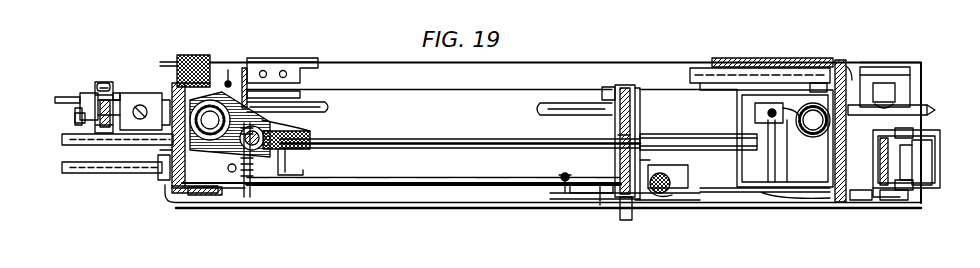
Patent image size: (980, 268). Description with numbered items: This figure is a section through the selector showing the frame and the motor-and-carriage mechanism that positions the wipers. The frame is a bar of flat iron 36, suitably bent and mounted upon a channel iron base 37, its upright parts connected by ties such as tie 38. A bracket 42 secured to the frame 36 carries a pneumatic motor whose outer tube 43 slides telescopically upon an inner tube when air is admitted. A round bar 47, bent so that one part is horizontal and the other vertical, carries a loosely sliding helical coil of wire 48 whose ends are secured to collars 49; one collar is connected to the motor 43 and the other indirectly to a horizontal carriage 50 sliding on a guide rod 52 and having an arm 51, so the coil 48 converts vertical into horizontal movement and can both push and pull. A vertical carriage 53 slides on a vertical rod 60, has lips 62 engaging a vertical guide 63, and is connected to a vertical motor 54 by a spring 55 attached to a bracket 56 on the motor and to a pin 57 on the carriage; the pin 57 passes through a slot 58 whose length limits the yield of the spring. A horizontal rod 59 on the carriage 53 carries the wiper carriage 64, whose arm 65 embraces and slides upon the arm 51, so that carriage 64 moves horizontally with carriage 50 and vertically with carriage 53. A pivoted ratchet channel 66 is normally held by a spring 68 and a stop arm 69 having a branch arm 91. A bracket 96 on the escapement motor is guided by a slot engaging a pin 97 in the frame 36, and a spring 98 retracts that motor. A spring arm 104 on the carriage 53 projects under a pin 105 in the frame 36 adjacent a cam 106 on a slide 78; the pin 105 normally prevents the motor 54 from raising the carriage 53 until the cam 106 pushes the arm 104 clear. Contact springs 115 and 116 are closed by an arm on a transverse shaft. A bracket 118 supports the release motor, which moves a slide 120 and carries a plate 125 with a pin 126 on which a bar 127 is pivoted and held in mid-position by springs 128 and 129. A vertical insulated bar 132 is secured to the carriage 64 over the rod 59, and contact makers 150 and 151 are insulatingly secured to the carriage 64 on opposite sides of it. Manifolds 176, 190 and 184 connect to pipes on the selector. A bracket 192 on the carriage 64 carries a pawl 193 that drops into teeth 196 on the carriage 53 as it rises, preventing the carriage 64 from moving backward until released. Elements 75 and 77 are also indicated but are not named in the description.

The bar of flat iron 36 is at (167, 197).
The channel iron base 37 is at (583, 73).
The tie 38 is at (430, 206).
The bracket 42 is at (172, 157).
The outer tube (horizontal motor) 43 is at (216, 130).
The round bar 47 is at (260, 150).
The helical coil of wire 48 is at (300, 152).
The collars 49 is at (268, 136).
The horizontal carriage 50 is at (611, 86).
The arm 51 is at (770, 62).
The guide rod 52 is at (326, 108).
The vertical carriage 53 is at (698, 142).
The vertical motor 54 is at (812, 130).
The spring 55 is at (755, 118).
The bracket 56 is at (755, 110).
The pin 57 is at (770, 168).
The slot 58 is at (690, 172).
The horizontal rod 59 is at (365, 143).
The vertical rod 60 is at (675, 190).
The lips 62 is at (205, 197).
The vertical guide 63 is at (160, 181).
The wiper carriage 64 is at (700, 95).
The arm 65 is at (816, 83).
The horizontal channel (ratchet bar) 66 is at (310, 58).
The spring 68 is at (258, 96).
The stop arm 69 is at (841, 66).
The box 75 is at (937, 150).
The member 77 is at (910, 132).
The slide 78 is at (880, 198).
The branch arm 91 is at (850, 75).
The bracket 96 is at (892, 78).
The pin 97 is at (905, 110).
The spring 98 is at (928, 108).
The spring arm 104 is at (562, 175).
The pin 105 is at (855, 200).
The cam 106 is at (880, 200).
The contact spring 115 is at (178, 75).
The contact spring 116 is at (178, 58).
The bracket 118 is at (95, 97).
The slide 120 is at (158, 92).
The plate or bracket 125 is at (113, 82).
The pin 126 is at (80, 121).
The bar 127 is at (72, 114).
The spring 128 is at (100, 88).
The spring 129 is at (102, 128).
The vertical insulated bar 132 is at (622, 135).
The contact maker 150 is at (638, 94).
The contact maker 151 is at (620, 175).
The manifold 176 is at (62, 168).
The manifold 184 is at (58, 106).
The manifold 190 is at (88, 136).
The bracket 192 is at (583, 194).
The pawl 193 is at (606, 183).
The teeth 196 is at (368, 178).